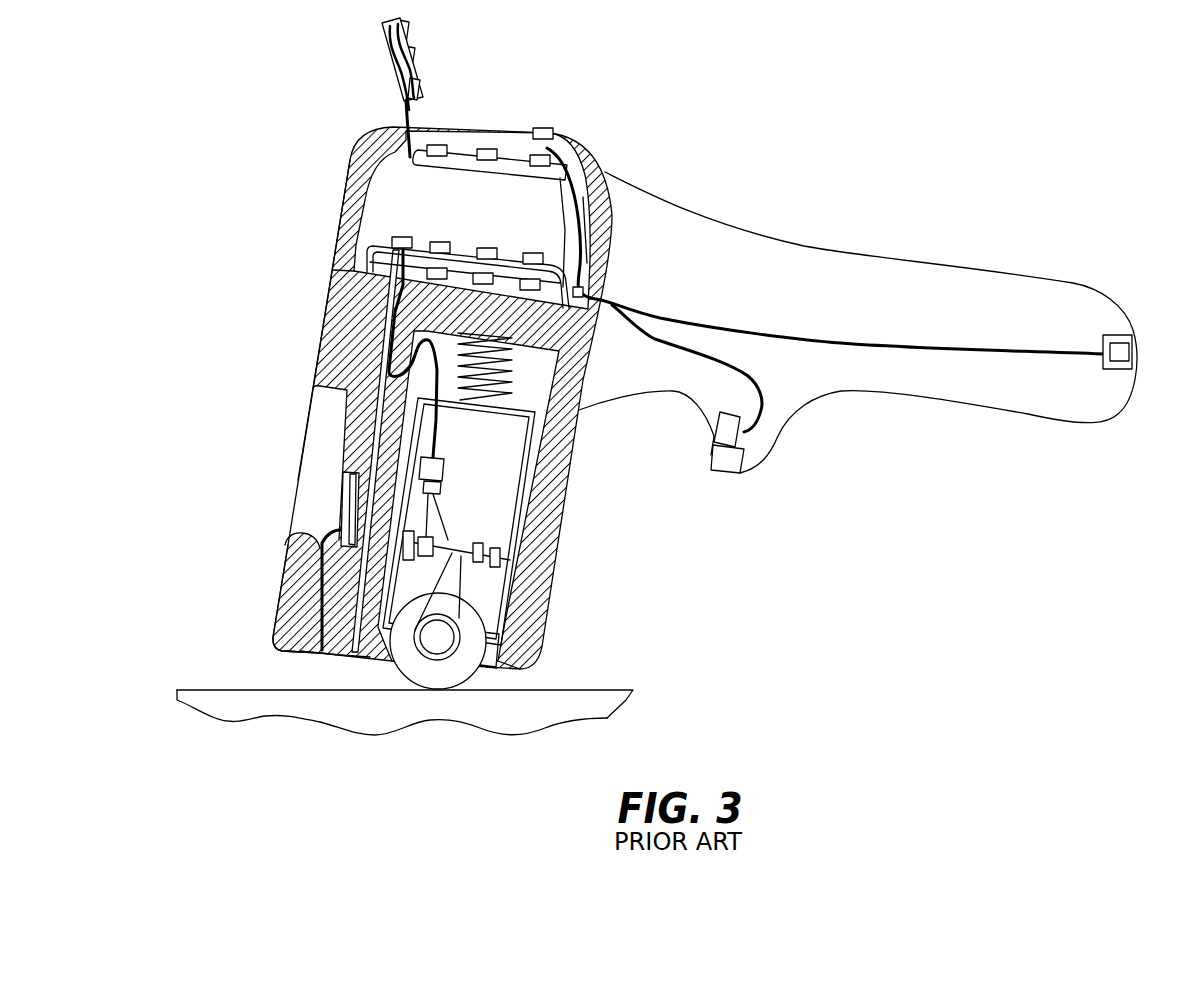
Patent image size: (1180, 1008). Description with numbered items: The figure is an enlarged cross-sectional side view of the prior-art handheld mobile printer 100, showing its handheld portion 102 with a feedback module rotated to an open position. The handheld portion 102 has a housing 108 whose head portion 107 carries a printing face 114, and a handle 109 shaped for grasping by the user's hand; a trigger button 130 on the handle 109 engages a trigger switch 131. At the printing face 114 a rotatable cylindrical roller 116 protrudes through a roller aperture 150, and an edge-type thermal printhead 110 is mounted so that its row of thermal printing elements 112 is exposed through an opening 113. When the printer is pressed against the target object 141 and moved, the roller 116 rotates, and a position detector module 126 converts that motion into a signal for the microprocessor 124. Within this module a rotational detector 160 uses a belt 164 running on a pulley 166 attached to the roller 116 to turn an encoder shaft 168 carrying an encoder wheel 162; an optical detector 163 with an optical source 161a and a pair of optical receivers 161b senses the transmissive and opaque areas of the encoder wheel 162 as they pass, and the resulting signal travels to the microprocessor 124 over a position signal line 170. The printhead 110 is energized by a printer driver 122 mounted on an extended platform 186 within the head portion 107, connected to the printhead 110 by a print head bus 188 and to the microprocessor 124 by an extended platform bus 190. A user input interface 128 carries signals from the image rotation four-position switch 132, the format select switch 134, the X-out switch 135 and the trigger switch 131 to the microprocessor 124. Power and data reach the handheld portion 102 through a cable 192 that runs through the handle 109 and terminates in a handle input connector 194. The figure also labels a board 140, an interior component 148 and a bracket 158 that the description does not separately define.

The handheld mobile printer 100 is at (933, 170).
The handheld portion 102 is at (352, 155).
The head portion 107 is at (338, 217).
The housing 108 is at (283, 557).
The handle 109 is at (950, 264).
The thermal printhead 110 is at (322, 654).
The thermal printing elements 112 is at (317, 654).
The opening 113 is at (300, 654).
The printing face 114 is at (337, 657).
The roller 116 is at (470, 678).
The printer driver 122 is at (350, 493).
The microprocessor 124 is at (441, 241).
The position detector module 126 is at (507, 560).
The user input interface 128 is at (514, 147).
The trigger button 130 is at (711, 455).
The trigger switch 131 is at (744, 447).
The image rotation four-position switch 132 is at (553, 133).
The format select switch 134 is at (415, 57).
The X-out switch 135 is at (395, 92).
The upper circuit board 140 is at (488, 146).
The target object 141 is at (613, 687).
The actuator housing 148 is at (534, 401).
The roller aperture 150 is at (387, 657).
The roller bracket 158 is at (503, 673).
The rotational detector 160 is at (418, 470).
The optical source 161a is at (417, 490).
The optical receivers 161b is at (443, 500).
The encoder wheel 162 is at (412, 520).
The optical detector 163 is at (446, 472).
The belt 164 is at (487, 640).
The pulley 166 is at (442, 662).
The encoder shaft 168 is at (513, 543).
The position signal line 170 is at (427, 363).
The extended platform 186 is at (391, 302).
The print head bus 188 is at (320, 602).
The extended platform bus 190 is at (410, 262).
The cable 192 is at (994, 354).
The handle input connector 194 is at (1118, 331).